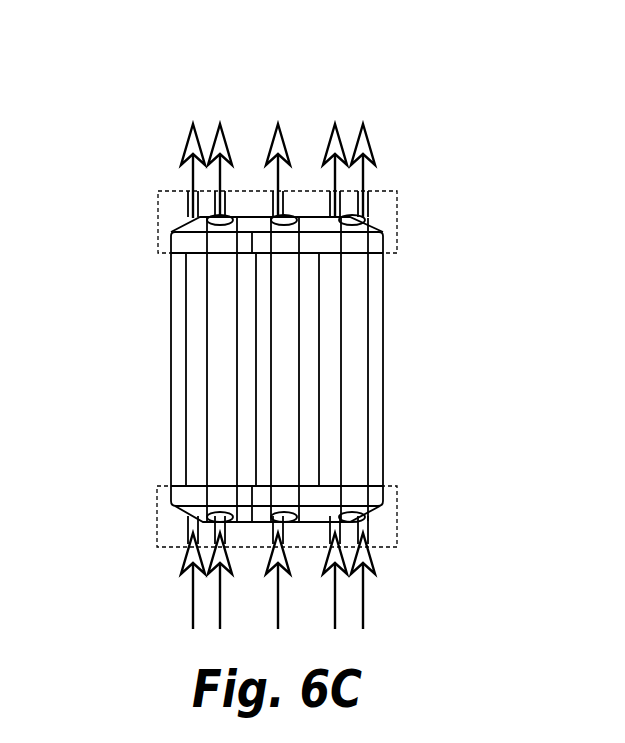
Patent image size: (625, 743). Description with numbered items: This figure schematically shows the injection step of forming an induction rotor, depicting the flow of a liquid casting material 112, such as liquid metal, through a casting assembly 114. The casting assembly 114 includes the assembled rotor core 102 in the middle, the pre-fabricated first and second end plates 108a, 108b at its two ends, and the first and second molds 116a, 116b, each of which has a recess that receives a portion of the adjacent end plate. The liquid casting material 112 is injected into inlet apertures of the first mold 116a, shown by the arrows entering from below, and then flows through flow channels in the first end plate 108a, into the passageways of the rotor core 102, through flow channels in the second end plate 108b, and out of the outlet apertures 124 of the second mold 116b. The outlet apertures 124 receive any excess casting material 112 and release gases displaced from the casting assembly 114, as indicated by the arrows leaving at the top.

The rotor core 102 is at (170, 373).
The first end plate 108a is at (383, 498).
The second end plate 108b is at (385, 237).
The liquid casting material 112 is at (229, 132).
The casting assembly 114 is at (418, 172).
The first mold 116a is at (170, 520).
The second mold 116b is at (165, 220).
The outlet apertures 124 is at (225, 207).